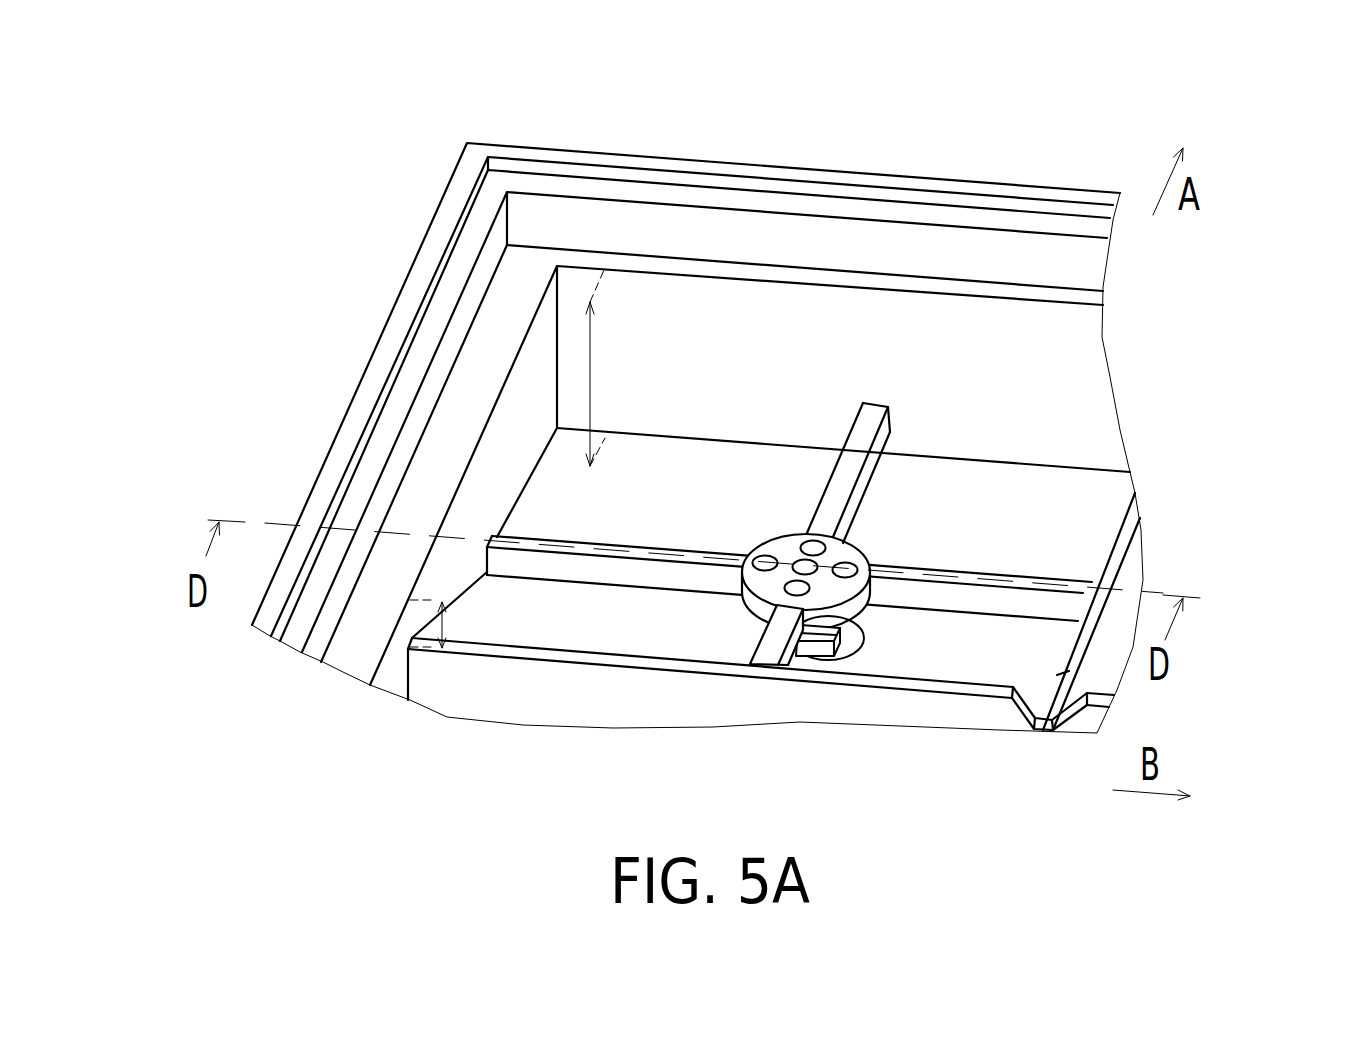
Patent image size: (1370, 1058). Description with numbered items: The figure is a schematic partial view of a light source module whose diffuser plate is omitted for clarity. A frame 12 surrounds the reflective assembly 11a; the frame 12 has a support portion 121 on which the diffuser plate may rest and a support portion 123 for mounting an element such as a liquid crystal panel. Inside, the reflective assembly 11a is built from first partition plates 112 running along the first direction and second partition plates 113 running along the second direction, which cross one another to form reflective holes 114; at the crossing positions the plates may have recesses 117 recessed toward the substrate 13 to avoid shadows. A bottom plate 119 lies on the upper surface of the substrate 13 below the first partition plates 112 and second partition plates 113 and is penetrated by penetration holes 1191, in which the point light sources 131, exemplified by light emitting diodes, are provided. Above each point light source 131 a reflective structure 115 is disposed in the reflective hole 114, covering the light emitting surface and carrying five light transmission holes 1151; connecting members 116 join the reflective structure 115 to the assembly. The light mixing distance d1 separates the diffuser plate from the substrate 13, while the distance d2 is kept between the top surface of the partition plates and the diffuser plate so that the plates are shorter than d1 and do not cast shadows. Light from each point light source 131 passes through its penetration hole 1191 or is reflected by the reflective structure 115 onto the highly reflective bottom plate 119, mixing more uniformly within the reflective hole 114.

The reflective assembly 11a is at (567, 540).
The first partition plates 112 is at (1108, 568).
The second partition plates 113 is at (535, 673).
The reflective holes 114 is at (1045, 495).
The reflective structure 115 is at (782, 550).
The light transmission holes 1151 is at (817, 540).
The connecting members 116 is at (872, 423).
The recesses 117 is at (1038, 692).
The bottom plate 119 is at (650, 630).
The penetration holes 1191 is at (858, 643).
The frame 12 is at (447, 297).
The support portion 121 is at (510, 290).
The support portion 123 is at (533, 190).
The substrate 13 is at (830, 650).
The point light sources 131 is at (810, 650).
The light mixing distance d1 is at (588, 368).
The distance d2 is at (440, 625).